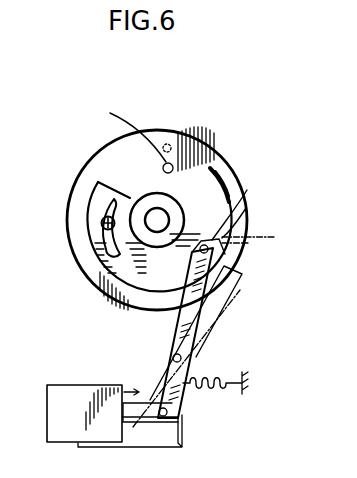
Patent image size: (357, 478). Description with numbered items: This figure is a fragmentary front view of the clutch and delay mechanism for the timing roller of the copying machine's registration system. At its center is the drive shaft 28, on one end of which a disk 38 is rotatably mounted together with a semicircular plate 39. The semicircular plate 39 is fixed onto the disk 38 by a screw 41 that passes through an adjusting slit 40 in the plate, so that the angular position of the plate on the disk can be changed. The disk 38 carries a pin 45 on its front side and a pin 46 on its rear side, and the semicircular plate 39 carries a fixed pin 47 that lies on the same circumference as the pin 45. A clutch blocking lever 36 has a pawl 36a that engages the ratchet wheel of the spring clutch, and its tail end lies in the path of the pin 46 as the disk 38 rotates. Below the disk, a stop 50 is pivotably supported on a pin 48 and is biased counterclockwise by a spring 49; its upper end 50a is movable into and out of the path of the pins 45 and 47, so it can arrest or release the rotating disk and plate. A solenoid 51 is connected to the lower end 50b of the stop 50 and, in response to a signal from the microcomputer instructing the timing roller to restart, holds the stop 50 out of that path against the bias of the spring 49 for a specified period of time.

The drive shaft 28 is at (158, 218).
The clutch blocking lever 36 is at (275, 237).
The pawl 36a is at (246, 213).
The disk 38 is at (87, 156).
The semicircular plate 39 is at (178, 279).
The adjusting slit 40 is at (112, 201).
The screw 41 is at (101, 223).
The pin 45 is at (123, 126).
The pin 46 is at (167, 144).
The fixed pin 47 is at (235, 201).
The pin 48 is at (182, 358).
The spring 49 is at (203, 387).
The stop 50 is at (159, 334).
The upper end 50a is at (238, 258).
The lower end 50b is at (177, 406).
The solenoid 51 is at (90, 388).